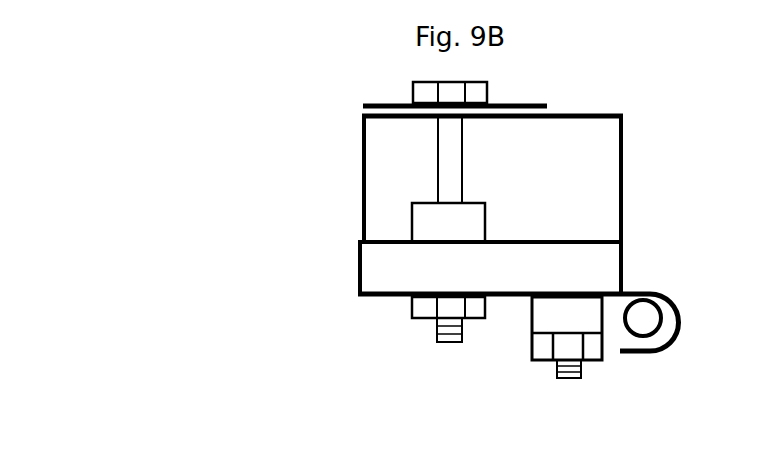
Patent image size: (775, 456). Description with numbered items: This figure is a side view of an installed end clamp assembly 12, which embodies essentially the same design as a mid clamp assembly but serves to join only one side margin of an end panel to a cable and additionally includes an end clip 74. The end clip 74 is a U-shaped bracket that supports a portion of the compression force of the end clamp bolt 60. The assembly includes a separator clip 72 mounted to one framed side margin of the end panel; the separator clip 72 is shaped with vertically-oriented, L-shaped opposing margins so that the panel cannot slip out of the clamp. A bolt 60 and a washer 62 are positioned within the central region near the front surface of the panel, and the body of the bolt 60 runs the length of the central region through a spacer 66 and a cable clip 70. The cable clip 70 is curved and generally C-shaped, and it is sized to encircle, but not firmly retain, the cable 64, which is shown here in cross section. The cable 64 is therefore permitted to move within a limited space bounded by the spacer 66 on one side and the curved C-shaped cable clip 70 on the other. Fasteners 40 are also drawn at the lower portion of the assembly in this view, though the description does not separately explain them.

The end clamp assembly 12 is at (240, 145).
The fastener bracket 40 is at (425, 318).
The bolt 60 is at (486, 82).
The washer 62 is at (365, 103).
The cable 64 is at (666, 310).
The spacer 66 is at (465, 229).
The cable clip 70 is at (667, 347).
The separator clip 72 is at (505, 278).
The end clip 74 is at (623, 196).